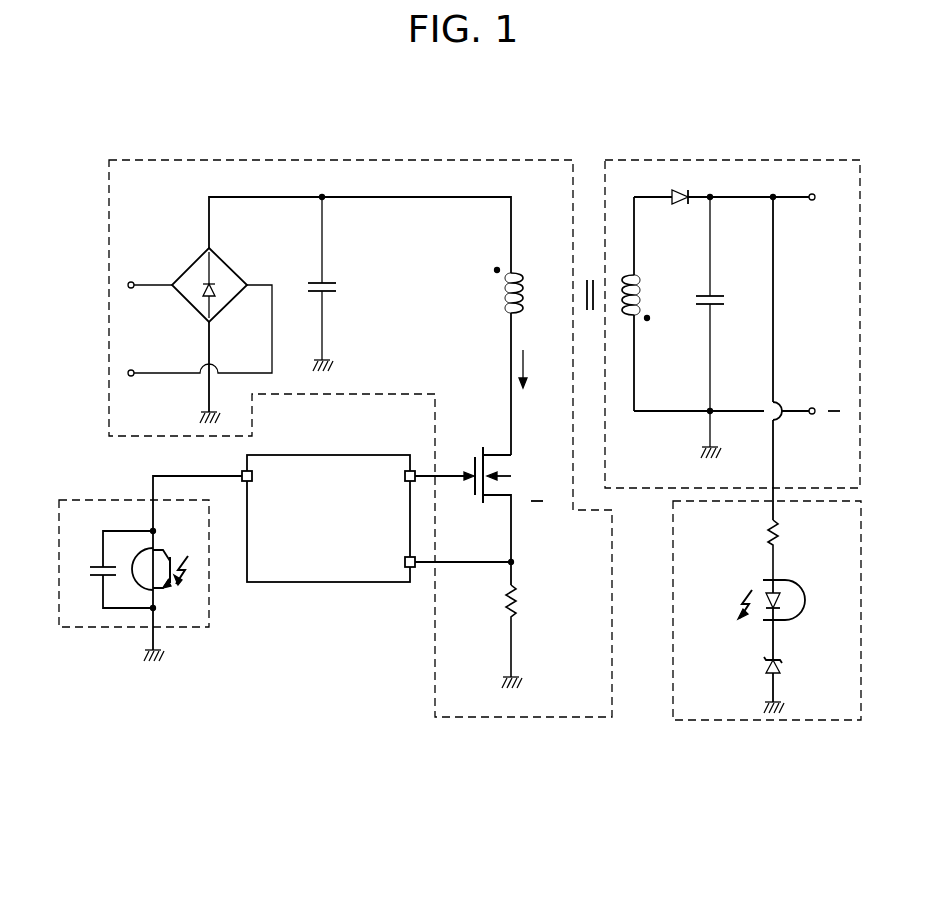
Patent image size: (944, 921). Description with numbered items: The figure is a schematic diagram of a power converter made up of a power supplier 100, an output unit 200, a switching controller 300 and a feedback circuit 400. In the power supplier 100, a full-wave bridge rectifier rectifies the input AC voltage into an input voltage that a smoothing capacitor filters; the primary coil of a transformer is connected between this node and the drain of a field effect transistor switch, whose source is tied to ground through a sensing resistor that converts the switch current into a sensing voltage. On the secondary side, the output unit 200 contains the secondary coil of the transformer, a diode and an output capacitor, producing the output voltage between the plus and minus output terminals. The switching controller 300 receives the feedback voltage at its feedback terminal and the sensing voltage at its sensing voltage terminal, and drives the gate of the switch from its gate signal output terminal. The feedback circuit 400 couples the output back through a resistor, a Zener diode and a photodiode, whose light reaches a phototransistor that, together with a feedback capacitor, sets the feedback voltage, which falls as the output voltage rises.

The power supplier 100 is at (394, 158).
The output unit 200 is at (766, 158).
The switching controller 300 is at (342, 454).
The feedback circuit 400 is at (86, 498).